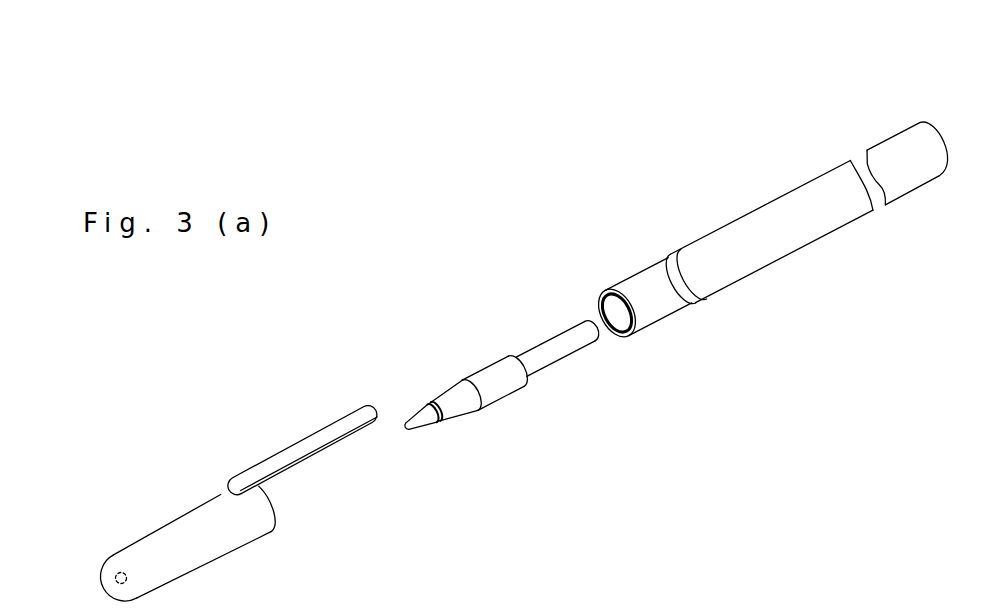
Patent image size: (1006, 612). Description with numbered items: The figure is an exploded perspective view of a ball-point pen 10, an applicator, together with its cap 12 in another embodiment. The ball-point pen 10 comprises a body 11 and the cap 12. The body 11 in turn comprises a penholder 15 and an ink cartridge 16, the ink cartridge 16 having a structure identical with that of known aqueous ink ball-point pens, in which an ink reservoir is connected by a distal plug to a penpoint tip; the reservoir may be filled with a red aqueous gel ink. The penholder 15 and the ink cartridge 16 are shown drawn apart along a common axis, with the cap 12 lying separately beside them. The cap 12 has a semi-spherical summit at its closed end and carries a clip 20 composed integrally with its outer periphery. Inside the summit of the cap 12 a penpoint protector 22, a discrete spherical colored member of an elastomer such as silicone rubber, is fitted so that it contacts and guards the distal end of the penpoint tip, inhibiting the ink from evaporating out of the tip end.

The ball-point pen 10 is at (813, 129).
The body 11 is at (604, 190).
The cap 12 is at (185, 530).
The penholder 15 is at (707, 241).
The ink cartridge 16 is at (518, 338).
The clip 20 is at (303, 440).
The penpoint protector 22 is at (120, 572).